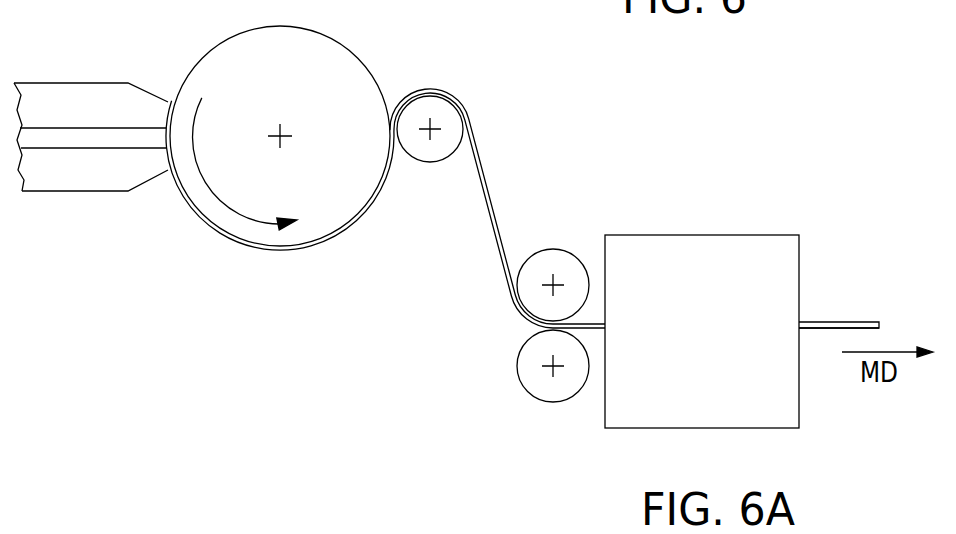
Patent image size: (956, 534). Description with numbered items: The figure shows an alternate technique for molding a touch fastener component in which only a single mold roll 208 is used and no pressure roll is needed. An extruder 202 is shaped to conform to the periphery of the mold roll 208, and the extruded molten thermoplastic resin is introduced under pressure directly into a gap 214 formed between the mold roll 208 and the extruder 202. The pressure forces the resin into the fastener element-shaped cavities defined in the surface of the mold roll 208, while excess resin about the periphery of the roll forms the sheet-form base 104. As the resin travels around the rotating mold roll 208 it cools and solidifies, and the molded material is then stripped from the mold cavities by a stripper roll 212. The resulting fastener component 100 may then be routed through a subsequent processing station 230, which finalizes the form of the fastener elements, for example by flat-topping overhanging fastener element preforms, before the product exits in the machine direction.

The male touch fastener component 100 is at (822, 292).
The sheet-form base 104 is at (820, 330).
The extruder 202 is at (56, 82).
The mold roll 208 is at (330, 89).
The stripper roll 212 is at (423, 163).
The gap 214 is at (165, 74).
The subsequent processing station 230 is at (690, 234).